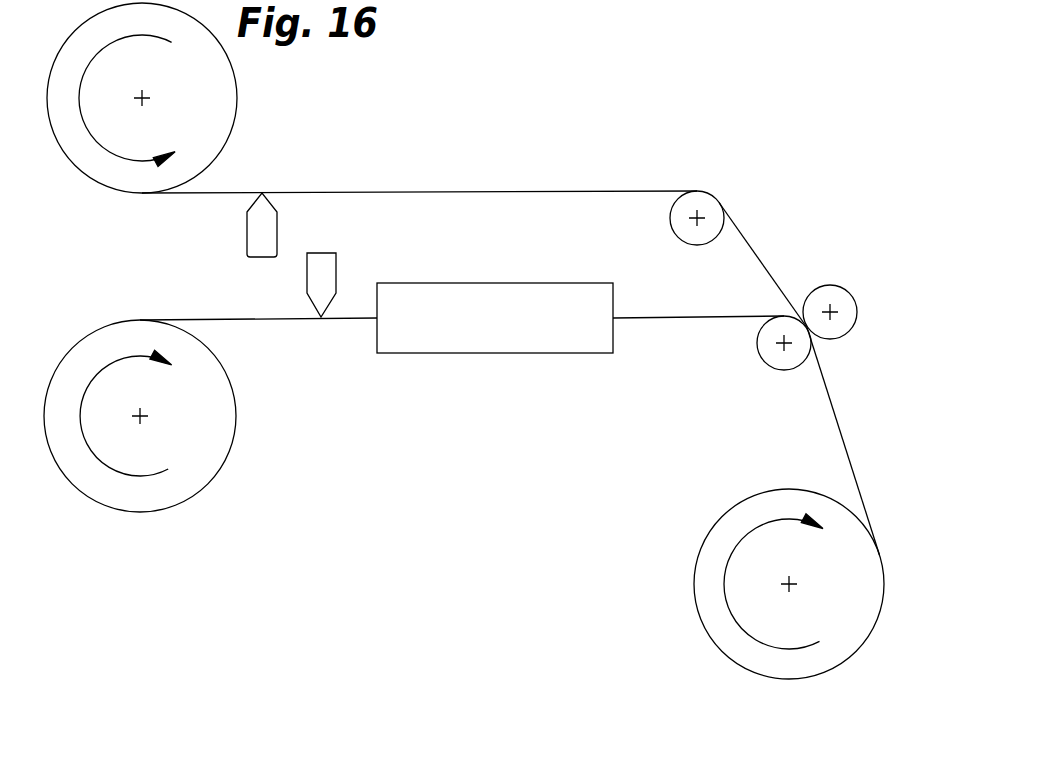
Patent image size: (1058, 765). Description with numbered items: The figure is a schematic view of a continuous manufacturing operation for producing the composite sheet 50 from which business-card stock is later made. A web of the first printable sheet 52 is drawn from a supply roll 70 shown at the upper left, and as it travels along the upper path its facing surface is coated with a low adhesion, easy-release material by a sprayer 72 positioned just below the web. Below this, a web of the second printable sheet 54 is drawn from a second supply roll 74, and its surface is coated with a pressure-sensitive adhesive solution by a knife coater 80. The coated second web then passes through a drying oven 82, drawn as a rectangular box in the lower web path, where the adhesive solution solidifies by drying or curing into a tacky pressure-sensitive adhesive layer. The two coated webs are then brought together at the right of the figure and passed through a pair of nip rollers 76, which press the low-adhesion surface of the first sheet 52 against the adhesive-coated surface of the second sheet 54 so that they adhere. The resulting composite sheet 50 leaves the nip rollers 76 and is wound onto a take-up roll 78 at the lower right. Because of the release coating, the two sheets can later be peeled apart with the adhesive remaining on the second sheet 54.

The composite sheet 50 is at (837, 422).
The first printable sheet 52 is at (237, 193).
The second printable sheet 54 is at (245, 320).
The supply roll 70 is at (237, 88).
The sprayer 72 is at (247, 230).
The second supply roll 74 is at (122, 508).
The nip rollers 76 is at (733, 362).
The take-up roll 78 is at (694, 590).
The knife coater 80 is at (307, 281).
The drying oven 82 is at (495, 318).